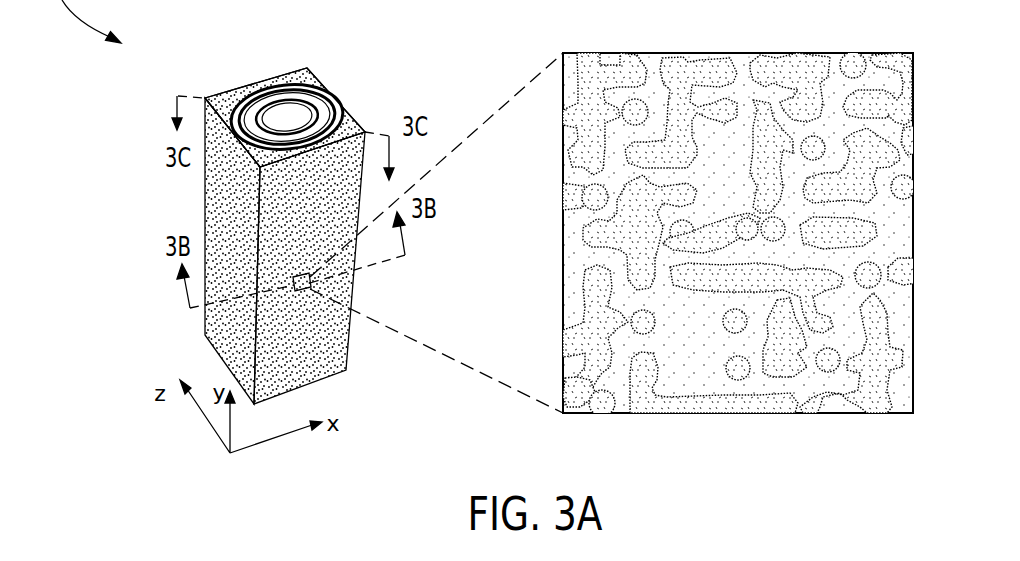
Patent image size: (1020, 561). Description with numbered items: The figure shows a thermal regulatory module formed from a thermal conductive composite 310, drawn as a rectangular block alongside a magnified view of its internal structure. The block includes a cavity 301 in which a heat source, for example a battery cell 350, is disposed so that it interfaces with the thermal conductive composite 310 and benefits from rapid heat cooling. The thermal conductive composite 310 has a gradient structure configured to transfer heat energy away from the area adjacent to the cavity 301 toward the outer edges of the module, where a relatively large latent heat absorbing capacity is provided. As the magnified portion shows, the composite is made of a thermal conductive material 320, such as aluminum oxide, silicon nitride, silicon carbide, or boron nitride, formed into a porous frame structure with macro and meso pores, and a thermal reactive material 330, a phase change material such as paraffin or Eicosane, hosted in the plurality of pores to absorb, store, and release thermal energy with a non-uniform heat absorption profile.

The cavity 301 is at (322, 93).
The thermal conductive composite 310 is at (352, 119).
The thermal conductive material 320 is at (710, 263).
The thermal reactive material 330 is at (740, 263).
The battery cell 350 is at (281, 106).